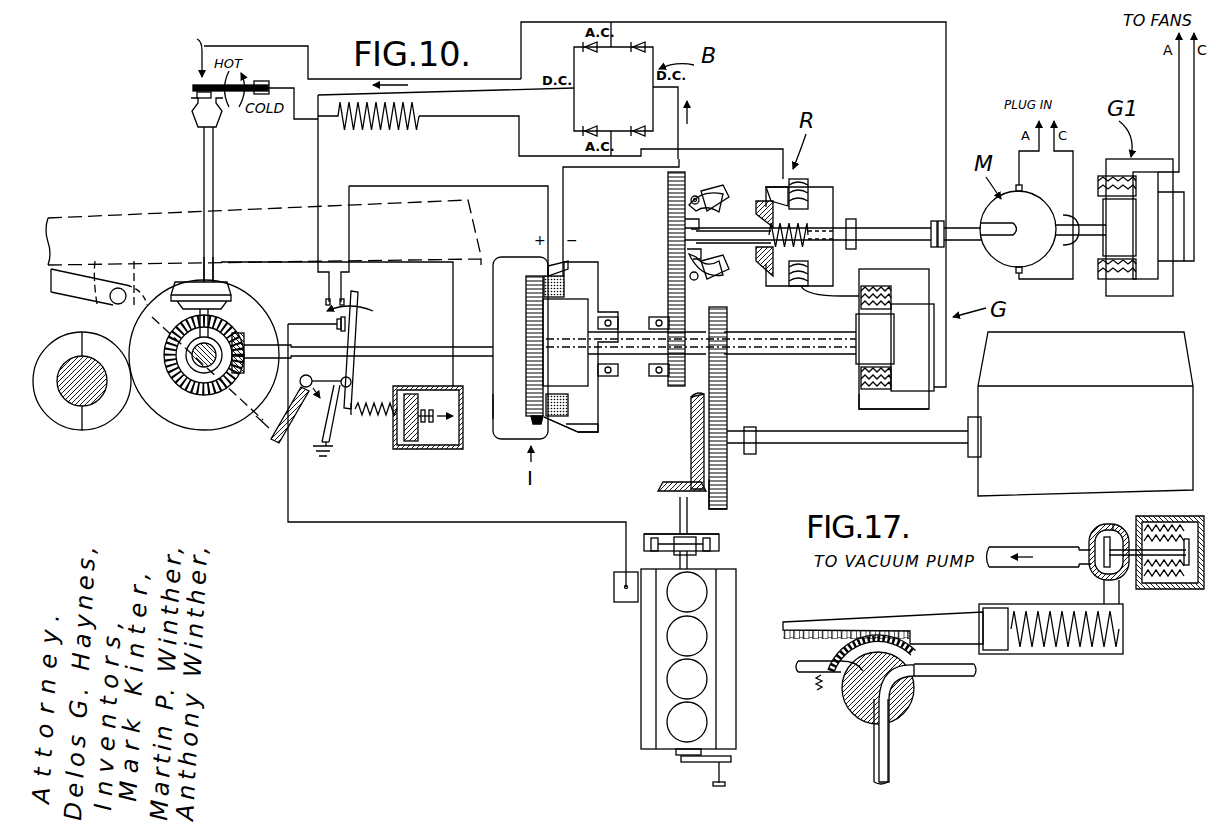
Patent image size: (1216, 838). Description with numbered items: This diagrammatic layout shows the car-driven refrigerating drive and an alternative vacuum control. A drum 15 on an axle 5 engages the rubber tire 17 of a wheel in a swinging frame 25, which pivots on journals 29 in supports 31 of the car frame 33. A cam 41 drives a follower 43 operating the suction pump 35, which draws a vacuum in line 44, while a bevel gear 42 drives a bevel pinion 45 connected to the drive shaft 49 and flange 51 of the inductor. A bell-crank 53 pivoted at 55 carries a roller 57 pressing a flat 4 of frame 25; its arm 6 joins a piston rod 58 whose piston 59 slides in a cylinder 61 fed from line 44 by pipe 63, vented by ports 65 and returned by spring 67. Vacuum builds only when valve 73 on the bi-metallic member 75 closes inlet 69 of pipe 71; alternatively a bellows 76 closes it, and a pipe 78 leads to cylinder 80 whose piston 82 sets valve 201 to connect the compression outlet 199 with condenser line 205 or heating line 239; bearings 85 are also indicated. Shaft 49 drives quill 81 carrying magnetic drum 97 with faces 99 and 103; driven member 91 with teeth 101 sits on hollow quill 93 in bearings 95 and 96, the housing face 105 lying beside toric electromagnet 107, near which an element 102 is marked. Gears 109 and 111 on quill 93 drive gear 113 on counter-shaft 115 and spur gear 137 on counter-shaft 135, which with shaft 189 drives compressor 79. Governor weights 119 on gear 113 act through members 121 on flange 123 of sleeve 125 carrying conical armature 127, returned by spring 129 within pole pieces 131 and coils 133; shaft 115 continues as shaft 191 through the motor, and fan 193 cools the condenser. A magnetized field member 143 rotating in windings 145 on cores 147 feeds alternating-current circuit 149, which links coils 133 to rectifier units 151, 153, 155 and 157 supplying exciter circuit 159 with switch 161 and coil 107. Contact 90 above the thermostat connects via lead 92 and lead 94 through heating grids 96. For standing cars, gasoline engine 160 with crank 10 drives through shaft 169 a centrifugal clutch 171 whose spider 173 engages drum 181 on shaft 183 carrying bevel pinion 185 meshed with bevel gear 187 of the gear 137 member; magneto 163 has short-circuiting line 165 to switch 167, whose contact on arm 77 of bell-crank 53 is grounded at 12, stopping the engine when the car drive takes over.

In FIG. 10, the flat 4 is at (263, 436).
In FIG. 10, the axle 5 is at (74, 397).
In FIG. 10, the arm of the bell-crank 6 is at (330, 433).
In FIG. 10, the starting crank 10 is at (680, 763).
In FIG. 10, the ground connection 12 is at (320, 461).
In FIG. 10, the metal drum 15 is at (103, 423).
In FIG. 10, the solid rubber tire 17 is at (176, 421).
In FIG. 10, the swinging frame 25 is at (255, 424).
In FIG. 10, the journals 29 is at (108, 302).
In FIG. 10, the supports 31 is at (135, 265).
In FIG. 10, the car frame 33 is at (80, 213).
In FIG. 10, the suction pump 35 is at (228, 288).
In FIG. 17, the suction pump 35 is at (883, 578).
In FIG. 10, the cam 41 is at (194, 381).
In FIG. 10, the bevel gear 42 is at (205, 386).
In FIG. 10, the follower 43 is at (222, 331).
In FIG. 10, the vacuum line 44 is at (202, 279).
In FIG. 10, the bevel pinion 45 is at (241, 343).
In FIG. 10, the drive shaft 49 is at (246, 366).
In FIG. 10, the flange 51 is at (500, 306).
In FIG. 10, the bell-crank 53 is at (326, 412).
In FIG. 10, the pivot 55 is at (351, 383).
In FIG. 10, the pressure roller 57 is at (300, 388).
In FIG. 10, the piston rod 58 is at (400, 426).
In FIG. 10, the piston 59 is at (417, 444).
In FIG. 10, the cylinder 61 is at (462, 441).
In FIG. 10, the pipe 63 is at (404, 268).
In FIG. 10, the ports 65 is at (392, 403).
In FIG. 10, the compression spring 67 is at (357, 418).
In FIG. 10, the inlet opening 69 is at (188, 113).
In FIG. 17, the inlet opening 69 is at (1122, 538).
In FIG. 10, the communicating pipe 71 is at (210, 172).
In FIG. 17, the communicating pipe 71 is at (1028, 553).
In FIG. 10, the valve 73 is at (197, 85).
In FIG. 17, the valve 73 is at (1122, 578).
In FIG. 10, the bi-metallic control member 75 is at (256, 82).
In FIG. 17, the bellows thermostat 76 is at (1182, 591).
In FIG. 10, the arm of the bell-crank 77 is at (358, 339).
In FIG. 17, the pipe 78 is at (1103, 596).
In FIG. 10, the compressor 79 is at (1100, 463).
In FIG. 17, the cylinder 80 is at (1062, 657).
In FIG. 10, the shaft 81 is at (632, 358).
In FIG. 17, the piston 82 is at (989, 663).
In FIG. 17, the bearings 85 is at (805, 650).
In FIG. 10, the contact 90 is at (186, 52).
In FIG. 10, the driven member 91 is at (592, 385).
In FIG. 10, the lead 92 is at (312, 76).
In FIG. 10, the hollow quill 93 is at (620, 328).
In FIG. 10, the lead 94 is at (293, 123).
In FIG. 10, the bearings 95 is at (610, 378).
In FIG. 10, the heating coils or grids 96 is at (417, 135).
In FIG. 10, the magnetic drum 97 is at (495, 400).
In FIG. 10, the inner flux-receiving face 99 is at (541, 426).
In FIG. 10, the flux-concentrating teeth 101 is at (530, 426).
In FIG. 10, the contact plate 102 is at (545, 283).
In FIG. 10, the smooth face 103 is at (556, 437).
In FIG. 10, the outer smooth face 105 is at (572, 436).
In FIG. 10, the electromagnet 107 is at (556, 395).
In FIG. 10, the gear 109 is at (668, 301).
In FIG. 10, the pinion 111 is at (726, 318).
In FIG. 10, the gear 113 is at (667, 201).
In FIG. 10, the counter-shaft 115 is at (726, 235).
In FIG. 10, the governor weights 119 is at (710, 192).
In FIG. 10, the control members 121 is at (684, 226).
In FIG. 10, the flange 123 is at (705, 258).
In FIG. 10, the sleeve 125 is at (760, 264).
In FIG. 10, the armature 127 is at (757, 206).
In FIG. 10, the spring 129 is at (830, 220).
In FIG. 10, the pole pieces 131 is at (775, 191).
In FIG. 10, the exciting coils 133 is at (797, 180).
In FIG. 10, the counter-shaft 135 is at (746, 432).
In FIG. 10, the spur gear 137 is at (726, 491).
In FIG. 10, the field member 143 is at (865, 350).
In FIG. 10, the generator windings 145 is at (857, 300).
In FIG. 10, the magnetic cores 147 is at (860, 408).
In FIG. 10, the alternating-current circuit 149 is at (730, 149).
In FIG. 10, the rectifier unit 151 is at (571, 39).
In FIG. 10, the rectifier unit 153 is at (654, 39).
In FIG. 10, the rectifier unit 155 is at (569, 140).
In FIG. 10, the rectifier unit 157 is at (651, 140).
In FIG. 10, the direct-current exciter circuit 159 is at (443, 97).
In FIG. 10, the gasoline engine 160 is at (718, 618).
In FIG. 10, the switch 161 is at (337, 292).
In FIG. 10, the magneto 163 is at (622, 607).
In FIG. 10, the short-circuiting line 165 is at (470, 525).
In FIG. 10, the switch 167 is at (337, 327).
In FIG. 10, the engine shaft 169 is at (690, 568).
In FIG. 10, the centrifugal clutch 171 is at (724, 536).
In FIG. 10, the spider 173 is at (672, 543).
In FIG. 10, the driven drum 181 is at (720, 546).
In FIG. 10, the shaft 183 is at (676, 509).
In FIG. 10, the bevel pinion 185 is at (668, 487).
In FIG. 10, the bevel gear 187 is at (690, 433).
In FIG. 10, the coupled shaft 189 is at (882, 446).
In FIG. 10, the shaft 191 is at (875, 230).
In FIG. 10, the fan 193 is at (931, 242).
In FIG. 17, the compression outlet 199 is at (888, 763).
In FIG. 17, the valve 201 is at (913, 708).
In FIG. 17, the condenser line 205 is at (940, 684).
In FIG. 17, the heating line 239 is at (807, 676).